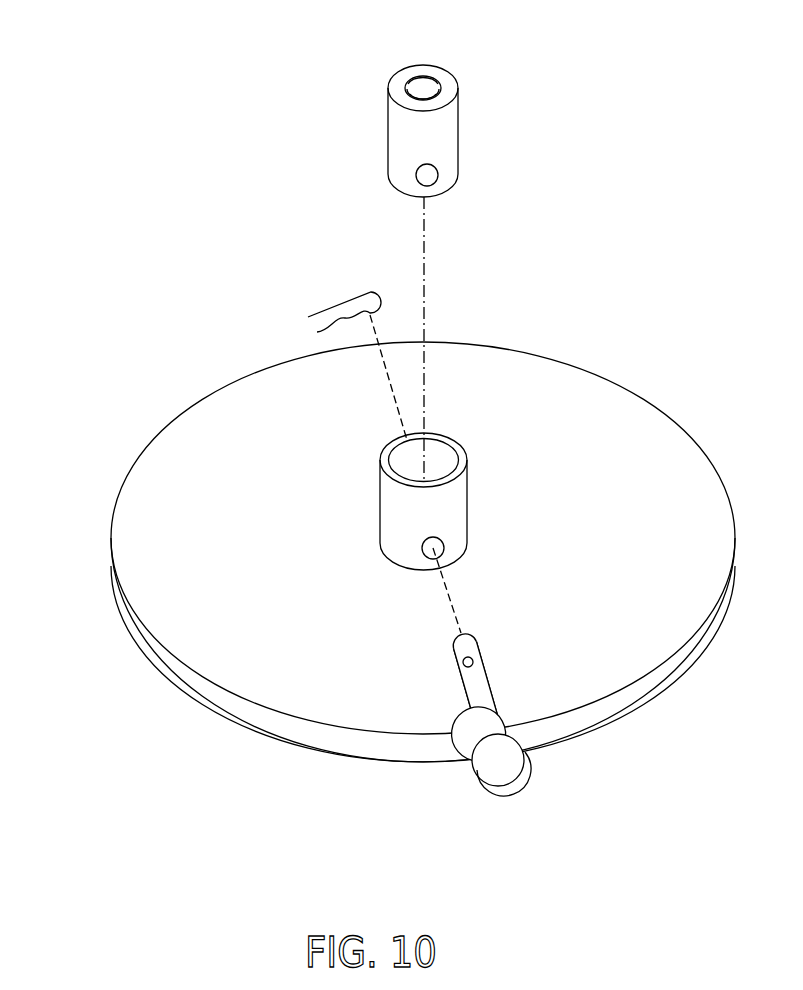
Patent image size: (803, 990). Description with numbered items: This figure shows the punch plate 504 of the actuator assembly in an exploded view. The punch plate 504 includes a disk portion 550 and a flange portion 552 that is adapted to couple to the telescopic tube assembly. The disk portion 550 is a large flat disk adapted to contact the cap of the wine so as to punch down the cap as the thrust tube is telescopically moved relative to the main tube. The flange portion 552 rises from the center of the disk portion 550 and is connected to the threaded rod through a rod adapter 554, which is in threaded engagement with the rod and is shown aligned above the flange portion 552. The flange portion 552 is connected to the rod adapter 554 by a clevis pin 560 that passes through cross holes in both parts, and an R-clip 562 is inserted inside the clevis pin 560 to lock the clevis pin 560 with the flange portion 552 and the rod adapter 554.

The punch plate 504 is at (598, 82).
The disk portion 550 is at (148, 640).
The flange portion 552 is at (378, 502).
The rod adapter 554 is at (447, 143).
The clevis pin 560 is at (503, 768).
The R-clip 562 is at (341, 300).